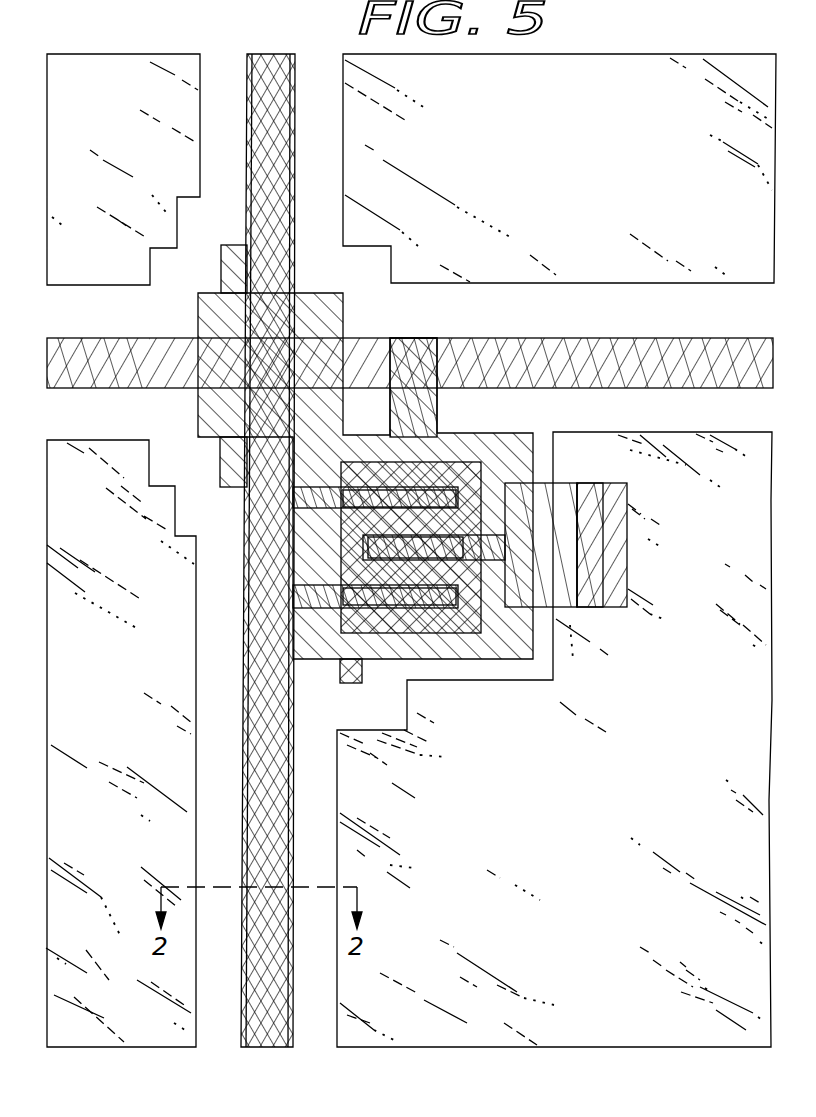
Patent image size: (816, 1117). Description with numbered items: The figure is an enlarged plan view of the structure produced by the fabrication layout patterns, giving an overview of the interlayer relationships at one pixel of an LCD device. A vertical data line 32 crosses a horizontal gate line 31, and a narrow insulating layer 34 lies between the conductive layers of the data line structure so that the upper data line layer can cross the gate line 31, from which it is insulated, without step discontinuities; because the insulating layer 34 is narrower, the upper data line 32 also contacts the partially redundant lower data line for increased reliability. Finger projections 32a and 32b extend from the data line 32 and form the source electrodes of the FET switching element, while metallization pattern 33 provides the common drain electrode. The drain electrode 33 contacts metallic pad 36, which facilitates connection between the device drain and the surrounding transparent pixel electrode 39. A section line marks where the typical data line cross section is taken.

The gate line 31 is at (47, 346).
The data line 32 is at (278, 54).
The finger projection 32a is at (313, 492).
The finger projection 32b is at (323, 600).
The metallization pattern 33 is at (568, 598).
The insulating layer 34 is at (198, 313).
The metallic pad 36 is at (620, 542).
The pixel electrode 39 is at (119, 122).